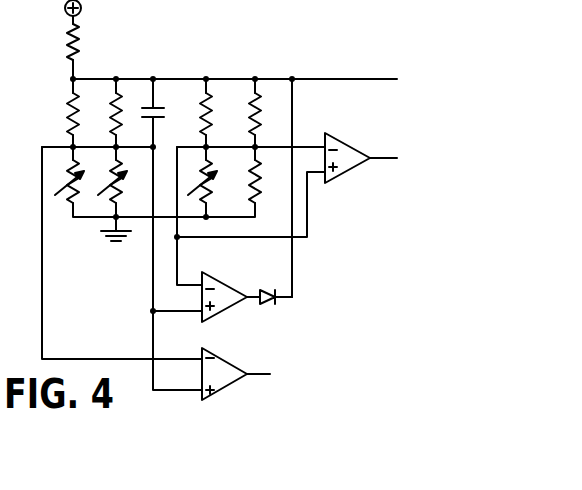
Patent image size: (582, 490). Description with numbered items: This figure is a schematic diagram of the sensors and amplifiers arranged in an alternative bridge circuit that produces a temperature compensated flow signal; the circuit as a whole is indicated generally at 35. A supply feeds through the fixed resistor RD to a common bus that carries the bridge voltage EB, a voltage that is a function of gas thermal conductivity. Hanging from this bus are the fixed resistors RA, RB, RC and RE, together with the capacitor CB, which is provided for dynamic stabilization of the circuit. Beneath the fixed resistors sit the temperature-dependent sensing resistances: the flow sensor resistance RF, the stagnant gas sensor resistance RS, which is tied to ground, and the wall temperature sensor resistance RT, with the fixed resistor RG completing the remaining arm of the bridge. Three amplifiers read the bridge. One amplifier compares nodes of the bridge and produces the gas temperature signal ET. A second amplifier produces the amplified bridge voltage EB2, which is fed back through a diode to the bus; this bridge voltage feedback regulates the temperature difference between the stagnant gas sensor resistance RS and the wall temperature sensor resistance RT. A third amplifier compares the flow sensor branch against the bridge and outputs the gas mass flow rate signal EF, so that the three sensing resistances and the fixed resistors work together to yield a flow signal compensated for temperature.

The fixed resistor RD is at (91, 41).
The fixed resistor RA is at (68, 105).
The fixed resistor RB is at (115, 106).
The capacitor CB is at (183, 101).
The fixed resistor RC is at (221, 106).
The fixed resistor RE is at (261, 108).
The flow sensor resistance RF is at (73, 201).
The stagnant gas sensor resistance RS is at (113, 205).
The wall temperature sensor resistance RT is at (215, 187).
The fixed resistor RG is at (276, 172).
The gas temperature signal ET is at (381, 159).
The bridge voltage EB is at (176, 79).
The bridge voltage EB2 is at (286, 299).
The gas mass flow rate signal EF is at (270, 376).
The circuit 35 is at (217, 12).